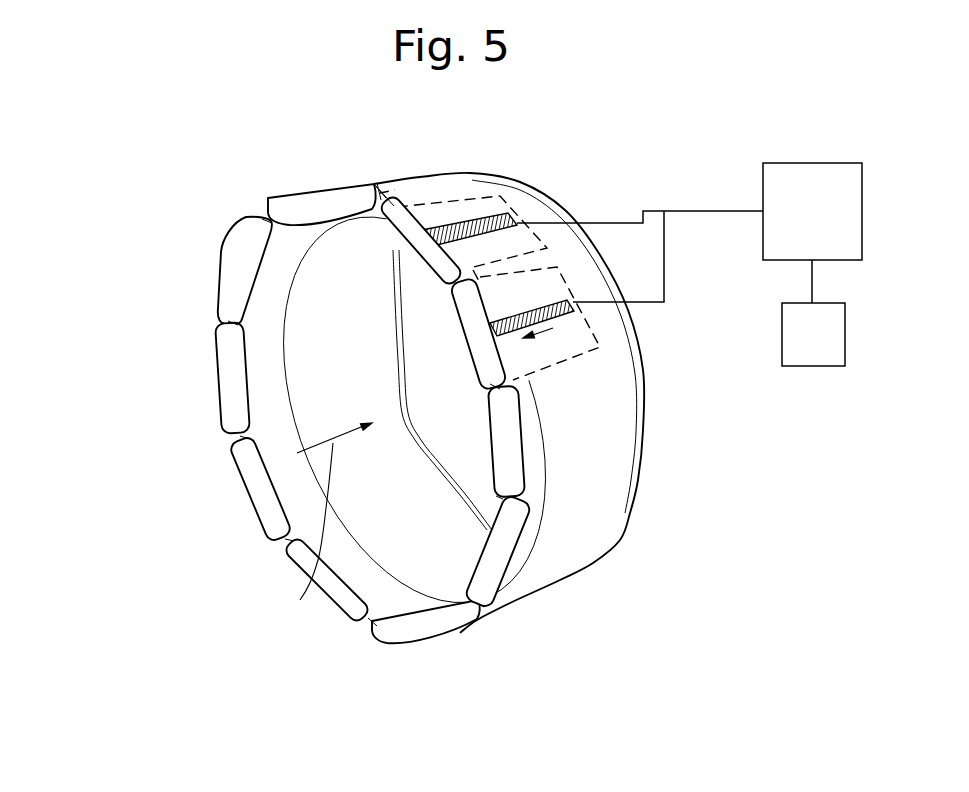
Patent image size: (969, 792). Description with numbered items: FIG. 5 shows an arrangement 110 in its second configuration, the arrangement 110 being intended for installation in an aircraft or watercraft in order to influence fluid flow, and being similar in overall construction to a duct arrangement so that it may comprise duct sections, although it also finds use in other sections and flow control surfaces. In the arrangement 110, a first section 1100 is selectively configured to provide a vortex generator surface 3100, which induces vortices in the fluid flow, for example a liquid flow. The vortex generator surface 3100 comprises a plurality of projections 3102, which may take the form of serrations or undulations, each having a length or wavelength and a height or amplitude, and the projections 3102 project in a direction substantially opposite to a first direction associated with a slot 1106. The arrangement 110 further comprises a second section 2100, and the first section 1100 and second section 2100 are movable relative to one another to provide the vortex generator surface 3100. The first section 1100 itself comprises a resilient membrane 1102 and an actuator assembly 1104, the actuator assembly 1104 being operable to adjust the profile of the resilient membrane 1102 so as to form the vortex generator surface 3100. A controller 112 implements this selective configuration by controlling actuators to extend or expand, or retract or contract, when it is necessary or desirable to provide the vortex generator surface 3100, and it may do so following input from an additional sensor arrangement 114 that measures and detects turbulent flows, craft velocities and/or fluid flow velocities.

The arrangement 110 is at (580, 163).
The controller 112 is at (791, 227).
The sensor arrangement 114 is at (792, 347).
The first section 1100 is at (217, 475).
The resilient membrane 1102 is at (245, 499).
The actuator assembly 1104 is at (500, 212).
The slot 1106 is at (300, 600).
The second section 2100 is at (400, 182).
The vortex generator surface 3100 is at (253, 544).
The projections 3102 is at (223, 282).